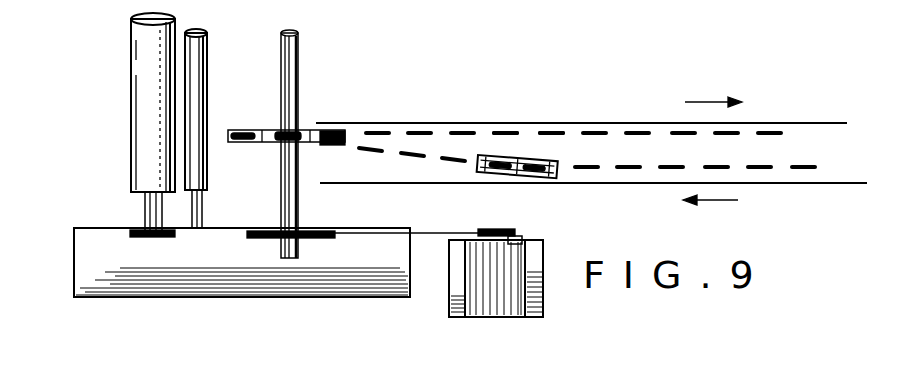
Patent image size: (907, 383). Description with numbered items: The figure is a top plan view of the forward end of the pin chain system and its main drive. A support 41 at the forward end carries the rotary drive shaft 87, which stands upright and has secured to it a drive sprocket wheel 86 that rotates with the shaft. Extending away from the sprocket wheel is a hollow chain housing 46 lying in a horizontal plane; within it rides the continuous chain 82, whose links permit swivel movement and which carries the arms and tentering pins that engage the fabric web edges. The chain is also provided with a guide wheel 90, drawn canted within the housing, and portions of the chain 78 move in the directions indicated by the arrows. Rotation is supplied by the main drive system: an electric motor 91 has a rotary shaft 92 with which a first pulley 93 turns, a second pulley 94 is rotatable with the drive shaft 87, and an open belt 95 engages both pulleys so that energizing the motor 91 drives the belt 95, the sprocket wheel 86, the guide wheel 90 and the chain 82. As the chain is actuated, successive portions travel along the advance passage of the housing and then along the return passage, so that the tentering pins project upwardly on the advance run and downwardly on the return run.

The support 41 is at (178, 298).
The chain housing 46 is at (614, 121).
The chain 78 is at (512, 132).
The continuous chain 82 is at (421, 124).
The drive sprocket wheel 86 is at (272, 130).
The rotary drive shaft 87 is at (298, 92).
The guide wheel 90 is at (531, 178).
The electric motor 91 is at (470, 317).
The rotary shaft 92 is at (520, 240).
The first pulley 93 is at (497, 229).
The second pulley 94 is at (267, 231).
The open belt 95 is at (424, 233).